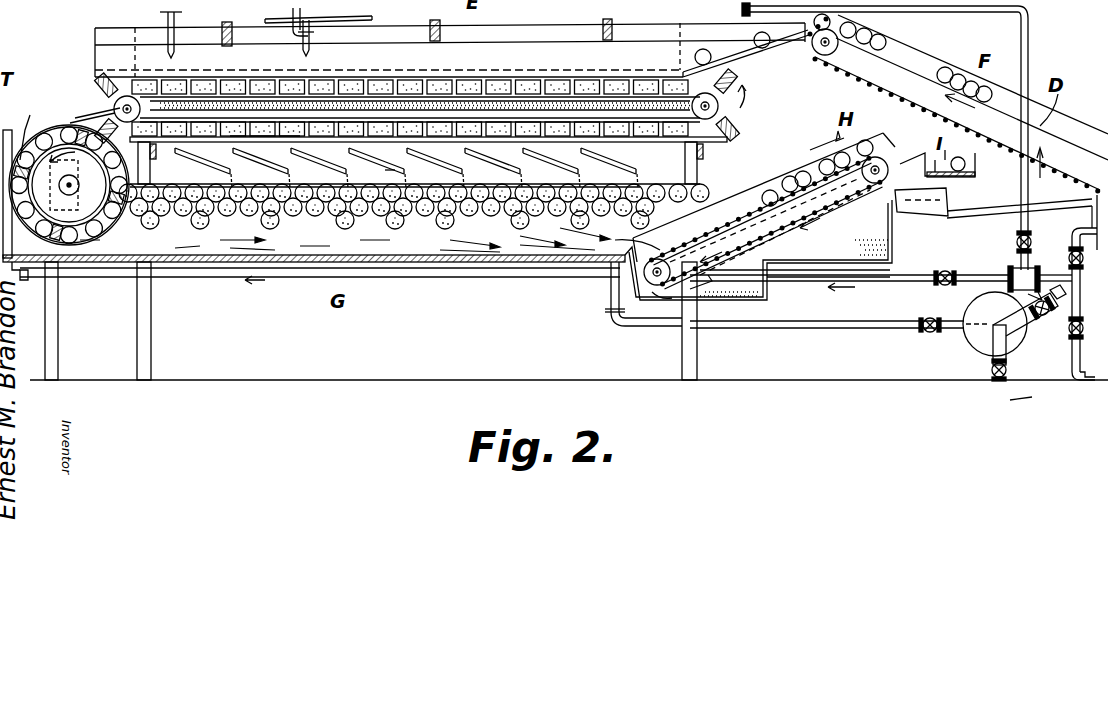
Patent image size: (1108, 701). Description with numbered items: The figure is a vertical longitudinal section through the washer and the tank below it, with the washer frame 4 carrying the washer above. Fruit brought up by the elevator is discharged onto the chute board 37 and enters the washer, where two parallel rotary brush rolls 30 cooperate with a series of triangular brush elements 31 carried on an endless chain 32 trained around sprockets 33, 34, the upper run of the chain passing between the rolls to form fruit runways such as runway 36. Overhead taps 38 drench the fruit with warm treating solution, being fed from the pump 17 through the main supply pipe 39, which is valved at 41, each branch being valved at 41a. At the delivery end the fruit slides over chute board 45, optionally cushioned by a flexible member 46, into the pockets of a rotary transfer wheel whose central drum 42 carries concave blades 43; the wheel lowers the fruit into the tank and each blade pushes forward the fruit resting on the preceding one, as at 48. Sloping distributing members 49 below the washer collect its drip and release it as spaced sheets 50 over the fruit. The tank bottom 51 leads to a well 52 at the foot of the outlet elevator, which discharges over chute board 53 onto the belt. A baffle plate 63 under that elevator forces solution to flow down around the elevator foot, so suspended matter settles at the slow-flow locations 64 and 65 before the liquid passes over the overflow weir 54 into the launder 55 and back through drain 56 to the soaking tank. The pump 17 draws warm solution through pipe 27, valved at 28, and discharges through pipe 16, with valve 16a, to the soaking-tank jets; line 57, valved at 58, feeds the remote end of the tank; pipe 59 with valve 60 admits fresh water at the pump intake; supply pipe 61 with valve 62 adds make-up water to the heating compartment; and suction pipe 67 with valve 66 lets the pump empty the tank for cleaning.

The frame 4 is at (222, 22).
The supply pipe 16 is at (1092, 382).
The valve 16a is at (1024, 400).
The pump 17 is at (972, 340).
The pipe 27 is at (1017, 340).
The valve 28 is at (1028, 322).
The rotary brush rolls 30 is at (365, 101).
The brush elements 31 is at (180, 88).
The endless chain 32 is at (260, 120).
The sprocket 33 is at (725, 118).
The sprocket 34 is at (401, 168).
The fruit runway 36 is at (372, 8).
The chute board 37 is at (745, 55).
The overhead taps 38 is at (300, 18).
The main supply pipe 39 is at (996, 14).
The valve 41 is at (170, 12).
The branch valve 41a is at (312, 35).
The central drum 42 is at (69, 185).
The blades 43 is at (15, 126).
The chute board 45 is at (112, 106).
The flexible member 46 is at (80, 118).
The fruit 48 is at (105, 215).
The sloping distributing members 49 is at (455, 158).
The sheets of drip or spray 50 is at (376, 174).
The tank bottom 51 is at (440, 262).
The recess or well 52 is at (712, 300).
The chute board 53 is at (913, 160).
The overflow weir 54 is at (915, 214).
The launder 55 is at (950, 193).
The drain 56 is at (1008, 210).
The line 57 is at (120, 275).
The valve 58 is at (958, 260).
The pipe 59 is at (992, 350).
The valve 60 is at (992, 372).
The supply pipe 61 is at (1080, 222).
The valve 62 is at (1068, 256).
The baffle plate 63 is at (790, 270).
The settling location 64 is at (760, 300).
The settling location 65 is at (875, 252).
The valve 66 is at (827, 310).
The suction pipe 67 is at (832, 322).